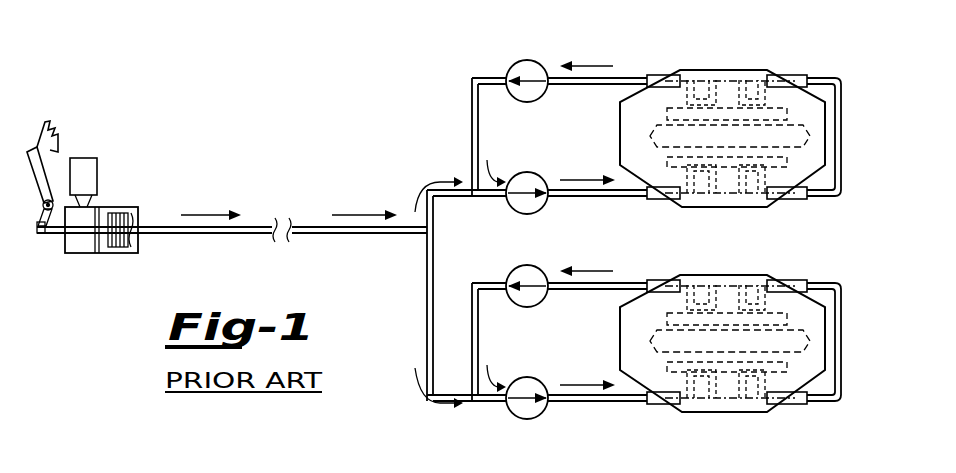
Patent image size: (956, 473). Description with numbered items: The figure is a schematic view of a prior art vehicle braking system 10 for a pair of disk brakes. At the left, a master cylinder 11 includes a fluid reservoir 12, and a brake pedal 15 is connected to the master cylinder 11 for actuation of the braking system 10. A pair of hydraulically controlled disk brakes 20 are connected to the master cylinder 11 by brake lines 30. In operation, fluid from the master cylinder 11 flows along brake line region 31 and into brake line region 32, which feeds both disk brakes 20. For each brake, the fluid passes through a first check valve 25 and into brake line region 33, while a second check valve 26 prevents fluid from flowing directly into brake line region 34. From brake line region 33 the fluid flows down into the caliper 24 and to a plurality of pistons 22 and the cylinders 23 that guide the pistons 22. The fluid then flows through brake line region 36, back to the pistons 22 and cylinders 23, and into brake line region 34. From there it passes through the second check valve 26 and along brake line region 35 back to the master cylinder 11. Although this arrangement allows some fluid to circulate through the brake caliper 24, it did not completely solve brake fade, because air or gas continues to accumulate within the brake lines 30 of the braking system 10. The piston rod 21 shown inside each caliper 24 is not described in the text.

The braking system 10 is at (222, 88).
The master cylinder 11 is at (105, 254).
The fluid reservoir 12 is at (96, 175).
The brake pedal 15 is at (62, 137).
The hydraulically controlled disk brakes 20 is at (636, 55).
The piston rod 21 is at (655, 136).
The pistons 22 is at (700, 78).
The cylinders 23 is at (676, 94).
The caliper 24 is at (788, 98).
The first check valve 25 is at (541, 214).
The second check valve 26 is at (541, 60).
The brake lines 30 is at (437, 151).
The brake line region 31 is at (298, 258).
The brake line region 32 is at (458, 197).
The brake line region 33 is at (611, 198).
The brake line region 34 is at (604, 86).
The brake line region 35 is at (478, 138).
The brake line region 36 is at (840, 143).